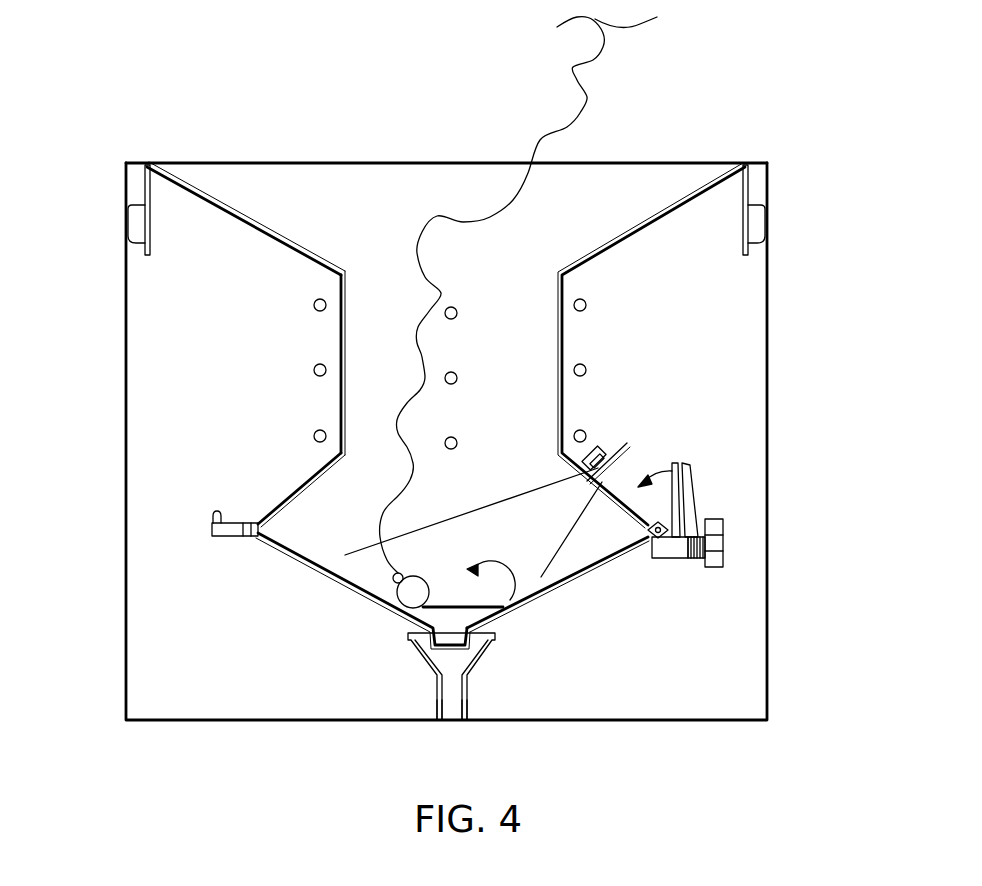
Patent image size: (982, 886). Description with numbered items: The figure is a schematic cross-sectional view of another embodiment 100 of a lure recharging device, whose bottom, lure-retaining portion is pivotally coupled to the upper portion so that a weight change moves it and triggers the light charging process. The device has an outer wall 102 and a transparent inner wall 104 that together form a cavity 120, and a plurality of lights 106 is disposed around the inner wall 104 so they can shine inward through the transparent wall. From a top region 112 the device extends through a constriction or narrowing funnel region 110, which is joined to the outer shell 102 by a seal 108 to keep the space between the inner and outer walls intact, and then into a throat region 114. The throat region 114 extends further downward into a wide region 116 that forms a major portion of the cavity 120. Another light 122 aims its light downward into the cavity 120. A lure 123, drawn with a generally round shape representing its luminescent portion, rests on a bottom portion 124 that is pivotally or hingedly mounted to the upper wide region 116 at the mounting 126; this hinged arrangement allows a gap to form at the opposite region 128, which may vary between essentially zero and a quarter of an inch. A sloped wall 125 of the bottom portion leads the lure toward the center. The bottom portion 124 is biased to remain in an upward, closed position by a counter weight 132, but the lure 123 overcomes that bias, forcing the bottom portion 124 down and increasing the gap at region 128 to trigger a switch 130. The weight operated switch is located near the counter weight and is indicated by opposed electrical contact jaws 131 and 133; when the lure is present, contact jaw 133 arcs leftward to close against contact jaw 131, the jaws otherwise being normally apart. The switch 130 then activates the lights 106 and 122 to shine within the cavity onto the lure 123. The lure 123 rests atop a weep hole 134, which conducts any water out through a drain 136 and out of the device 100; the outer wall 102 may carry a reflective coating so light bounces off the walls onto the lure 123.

The lure recharging device embodiment 100 is at (786, 150).
The outer wall 102 is at (768, 388).
The transparent inner wall 104 is at (565, 398).
The lights 106 is at (456, 306).
The seal 108 is at (128, 222).
The funnel region 110 is at (203, 190).
The top region 112 is at (378, 156).
The throat region 114 is at (335, 335).
The wide region 116 is at (305, 470).
The cavity 120 is at (465, 492).
The light 122 is at (600, 450).
The lure 123 is at (394, 587).
The bottom portion 124 is at (598, 575).
The left chute 125 is at (379, 591).
The pivotal mounting 126 is at (672, 550).
The gap region 128 is at (213, 530).
The switch 130 is at (215, 515).
The contact jaw 131 is at (690, 465).
The counter weight 132 is at (724, 537).
The contact jaw 133 is at (703, 470).
The weep hole 134 is at (468, 640).
The drain 136 is at (455, 705).